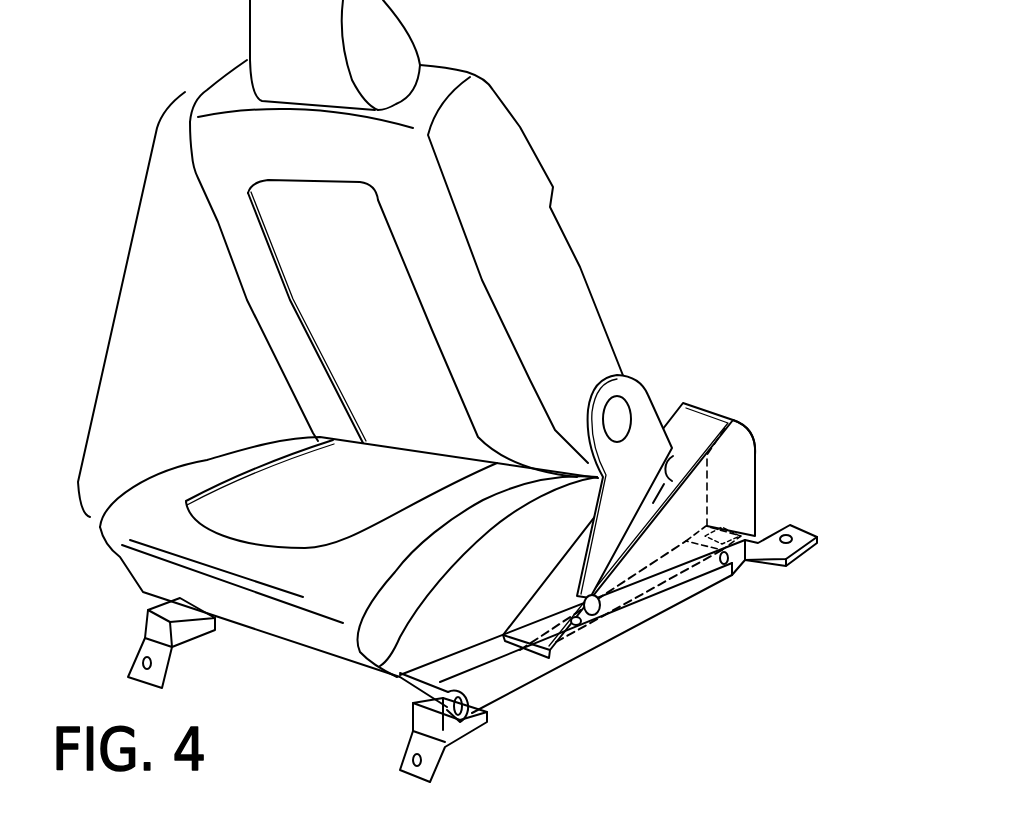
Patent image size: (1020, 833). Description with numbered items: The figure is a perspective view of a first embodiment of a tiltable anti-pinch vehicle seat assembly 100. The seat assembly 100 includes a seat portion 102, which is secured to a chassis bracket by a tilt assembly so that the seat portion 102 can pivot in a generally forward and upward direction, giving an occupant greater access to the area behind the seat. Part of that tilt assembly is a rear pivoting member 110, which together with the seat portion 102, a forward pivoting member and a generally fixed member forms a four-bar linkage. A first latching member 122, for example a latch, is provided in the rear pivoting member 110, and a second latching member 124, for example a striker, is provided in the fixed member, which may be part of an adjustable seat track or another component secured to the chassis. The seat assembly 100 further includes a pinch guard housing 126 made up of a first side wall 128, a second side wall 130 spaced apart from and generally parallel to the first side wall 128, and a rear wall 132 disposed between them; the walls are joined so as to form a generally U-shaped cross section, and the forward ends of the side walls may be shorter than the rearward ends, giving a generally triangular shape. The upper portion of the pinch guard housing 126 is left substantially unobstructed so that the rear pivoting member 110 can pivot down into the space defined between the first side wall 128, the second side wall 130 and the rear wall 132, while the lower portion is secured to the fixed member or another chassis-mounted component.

The tiltable anti-pinch vehicle seat assembly 100 is at (193, 55).
The seat portion 102 is at (121, 297).
The rear pivoting member 110 is at (643, 423).
The first latching member 122 is at (662, 462).
The second latching member 124 is at (693, 552).
The pinch guard housing 126 is at (759, 408).
The first side wall 128 is at (733, 492).
The second side wall 130 is at (690, 437).
The rear wall 132 is at (733, 465).